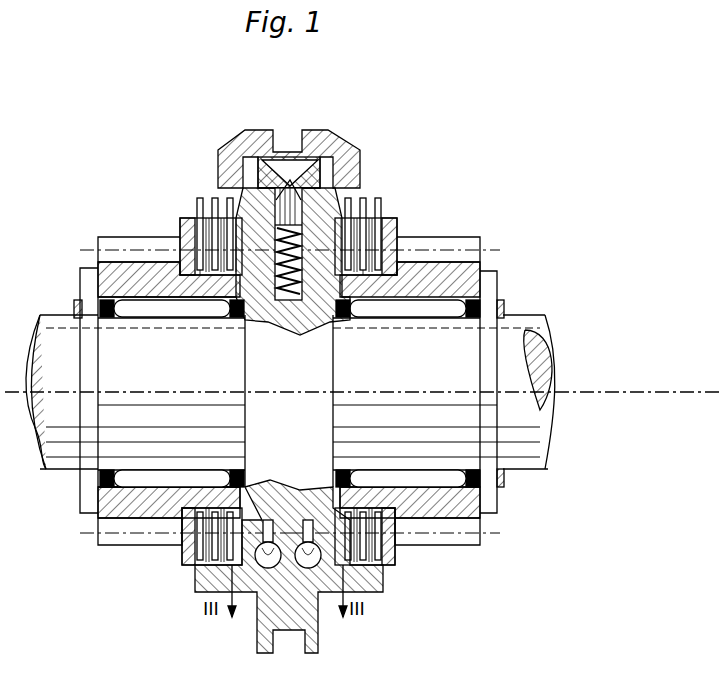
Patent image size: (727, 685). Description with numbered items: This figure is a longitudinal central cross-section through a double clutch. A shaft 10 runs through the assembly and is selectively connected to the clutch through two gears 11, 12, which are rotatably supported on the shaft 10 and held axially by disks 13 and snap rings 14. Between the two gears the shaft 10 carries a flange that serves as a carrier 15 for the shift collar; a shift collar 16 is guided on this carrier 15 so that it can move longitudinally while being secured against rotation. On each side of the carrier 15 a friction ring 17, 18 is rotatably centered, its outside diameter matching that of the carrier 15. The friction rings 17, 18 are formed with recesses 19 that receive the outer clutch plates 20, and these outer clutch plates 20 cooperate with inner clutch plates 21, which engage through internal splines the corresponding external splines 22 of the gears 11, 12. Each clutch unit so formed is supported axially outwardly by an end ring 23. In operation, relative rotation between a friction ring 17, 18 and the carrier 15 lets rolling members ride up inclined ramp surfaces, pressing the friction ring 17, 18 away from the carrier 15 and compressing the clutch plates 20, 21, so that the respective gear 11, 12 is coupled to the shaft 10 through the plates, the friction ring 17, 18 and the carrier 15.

The shaft 10 is at (527, 345).
The gear 11 is at (415, 245).
The gear 12 is at (148, 247).
The disk 13 is at (488, 273).
The snap ring 14 is at (505, 305).
The carrier 15 is at (315, 432).
The shift collar 16 is at (270, 612).
The friction ring 17 is at (360, 580).
The friction ring 18 is at (213, 580).
The recess 19 is at (362, 188).
The outer clutch plate 20 is at (197, 203).
The inner clutch plate 21 is at (215, 280).
The external spline 22 is at (203, 282).
The end ring 23 is at (190, 228).